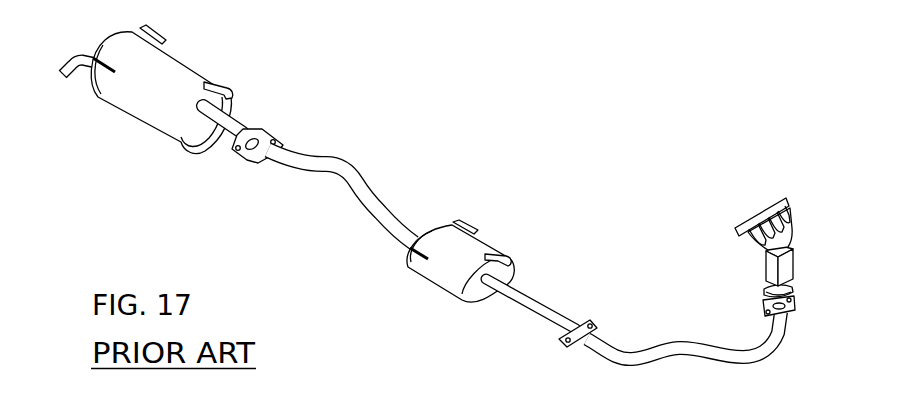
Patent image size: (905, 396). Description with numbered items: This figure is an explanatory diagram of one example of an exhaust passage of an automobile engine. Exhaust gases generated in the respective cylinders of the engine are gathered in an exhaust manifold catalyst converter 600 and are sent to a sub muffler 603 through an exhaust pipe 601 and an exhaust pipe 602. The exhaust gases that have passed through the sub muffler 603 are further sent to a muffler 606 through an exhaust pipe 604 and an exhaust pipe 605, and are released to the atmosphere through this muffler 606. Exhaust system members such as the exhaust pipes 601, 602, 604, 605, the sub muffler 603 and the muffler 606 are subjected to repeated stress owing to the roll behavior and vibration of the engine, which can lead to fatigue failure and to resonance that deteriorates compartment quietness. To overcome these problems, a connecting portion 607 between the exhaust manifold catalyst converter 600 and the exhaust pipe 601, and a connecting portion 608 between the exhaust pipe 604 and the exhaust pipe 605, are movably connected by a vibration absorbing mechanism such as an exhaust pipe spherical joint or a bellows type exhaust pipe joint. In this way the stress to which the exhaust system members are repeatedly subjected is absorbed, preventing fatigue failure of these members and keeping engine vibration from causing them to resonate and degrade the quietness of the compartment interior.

The exhaust manifold catalyst converter 600 is at (765, 268).
The exhaust pipe 601 is at (702, 357).
The exhaust pipe 602 is at (530, 307).
The sub muffler 603 is at (442, 280).
The exhaust pipe 604 is at (358, 178).
The exhaust pipe 605 is at (228, 119).
The muffler 606 is at (162, 62).
The connecting portion 607 is at (759, 305).
The connecting portion 608 is at (273, 131).